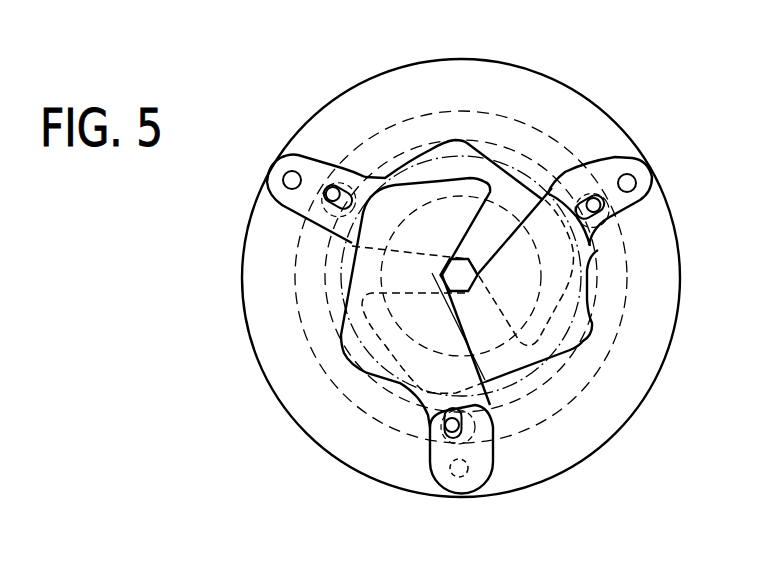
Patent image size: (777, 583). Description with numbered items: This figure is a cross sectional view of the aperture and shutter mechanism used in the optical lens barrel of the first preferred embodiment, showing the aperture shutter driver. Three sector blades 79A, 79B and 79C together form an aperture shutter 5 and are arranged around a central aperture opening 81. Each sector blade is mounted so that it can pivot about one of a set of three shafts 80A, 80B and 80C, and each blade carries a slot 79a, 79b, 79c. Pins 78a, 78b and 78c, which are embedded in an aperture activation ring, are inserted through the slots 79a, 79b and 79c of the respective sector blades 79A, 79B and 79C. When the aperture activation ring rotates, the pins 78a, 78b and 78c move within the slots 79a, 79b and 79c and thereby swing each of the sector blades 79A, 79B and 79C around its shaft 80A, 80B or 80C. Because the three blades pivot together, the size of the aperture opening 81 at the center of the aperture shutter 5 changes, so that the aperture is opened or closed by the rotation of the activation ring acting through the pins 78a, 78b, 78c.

The aperture shutter 5 is at (468, 125).
The pin 78a is at (297, 227).
The pin 78b is at (445, 426).
The pin 78c is at (592, 197).
The sector blade 79A is at (298, 163).
The sector blade 79B is at (465, 452).
The sector blade 79C is at (625, 160).
The slot 79a is at (357, 188).
The slot 79b is at (493, 420).
The slot 79c is at (590, 257).
The shaft 80A is at (284, 177).
The shaft 80B is at (456, 478).
The shaft 80C is at (636, 184).
The aperture opening 81 is at (455, 276).